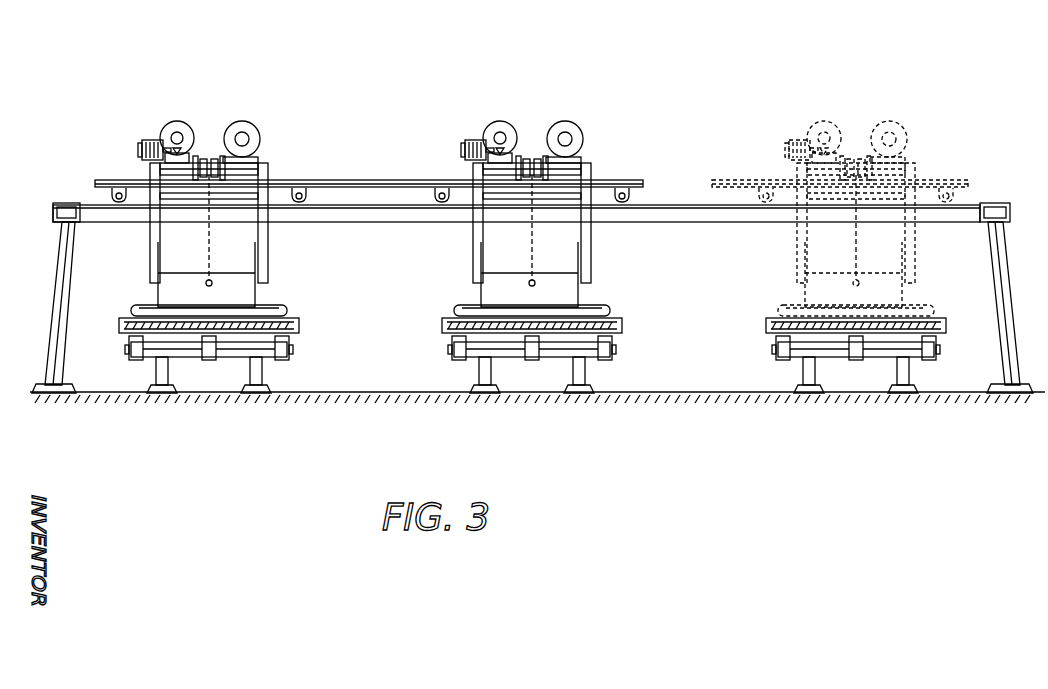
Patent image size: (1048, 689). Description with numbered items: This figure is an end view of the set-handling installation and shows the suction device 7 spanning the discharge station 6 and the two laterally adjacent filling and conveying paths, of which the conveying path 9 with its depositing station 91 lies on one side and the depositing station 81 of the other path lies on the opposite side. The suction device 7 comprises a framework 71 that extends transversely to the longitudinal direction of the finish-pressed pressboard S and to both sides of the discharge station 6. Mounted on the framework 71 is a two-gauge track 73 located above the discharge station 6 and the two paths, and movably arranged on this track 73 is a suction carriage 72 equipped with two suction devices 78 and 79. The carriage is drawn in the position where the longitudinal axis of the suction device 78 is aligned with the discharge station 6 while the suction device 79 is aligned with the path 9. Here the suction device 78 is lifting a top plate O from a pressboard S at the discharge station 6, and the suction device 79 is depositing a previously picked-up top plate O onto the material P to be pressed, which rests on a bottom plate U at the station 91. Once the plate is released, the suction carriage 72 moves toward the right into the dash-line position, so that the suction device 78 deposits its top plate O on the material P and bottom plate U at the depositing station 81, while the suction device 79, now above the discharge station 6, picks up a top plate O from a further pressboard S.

The filling and conveying path 9 is at (197, 103).
The suction device 7 is at (538, 108).
The suction carriage 72 is at (366, 179).
The two-gauge track 73 is at (672, 208).
The framework 71 is at (1003, 243).
The suction device 79 is at (150, 256).
The suction device 78 is at (473, 260).
The depositing station 91 is at (203, 377).
The discharge station 6 is at (520, 378).
The depositing station 81 is at (840, 378).
The top plate O is at (294, 313).
The material to be pressed P is at (300, 325).
The finish-pressed pressboard S is at (622, 325).
The bottom plate U is at (298, 334).